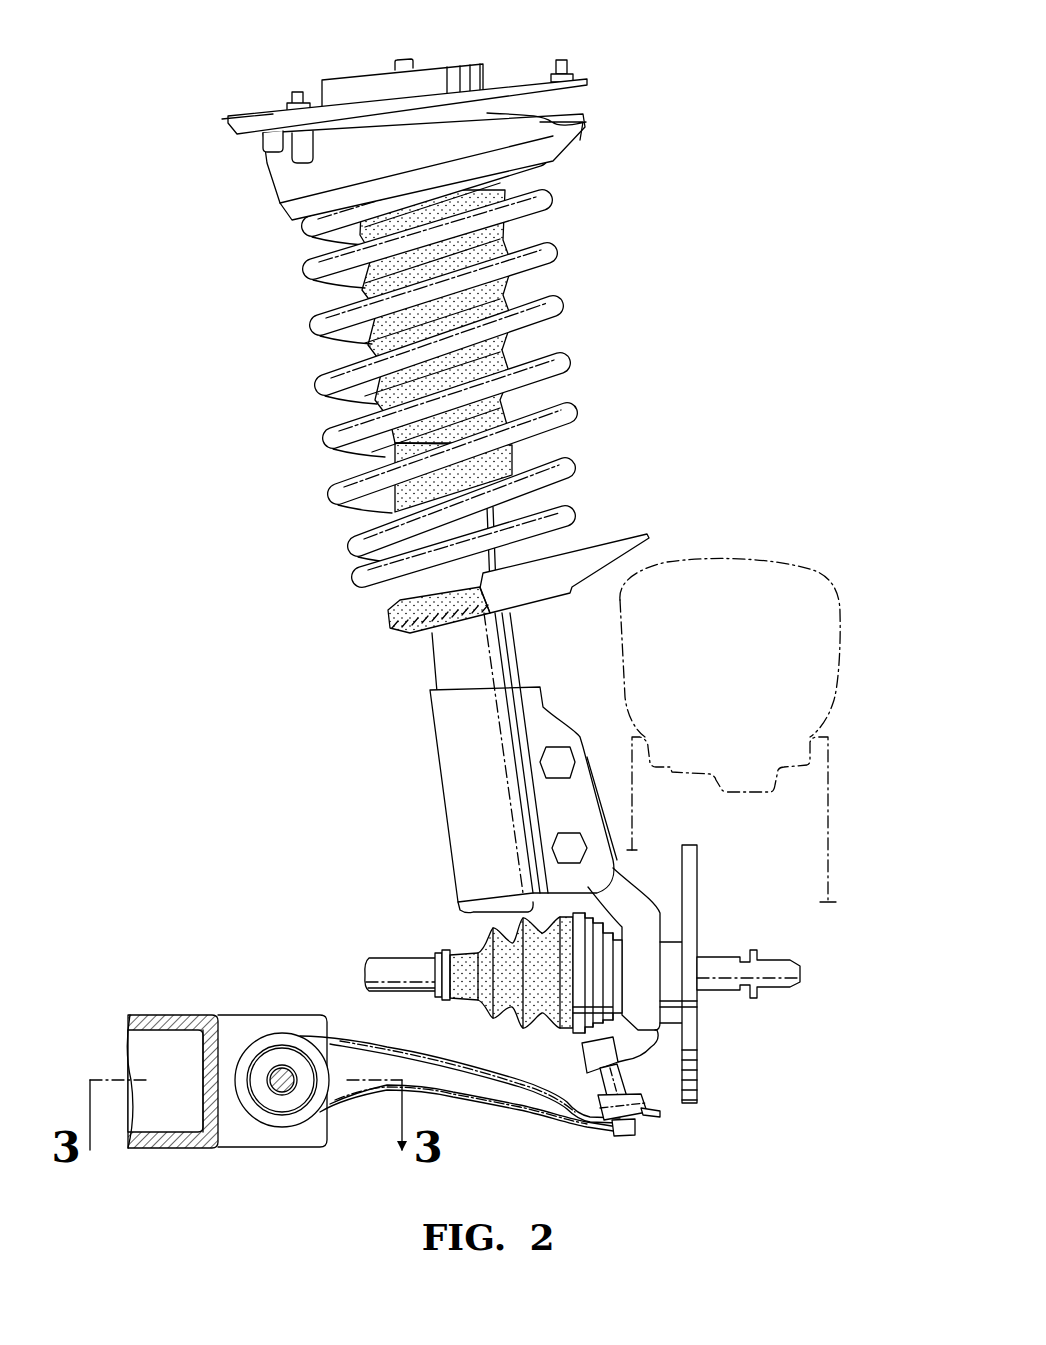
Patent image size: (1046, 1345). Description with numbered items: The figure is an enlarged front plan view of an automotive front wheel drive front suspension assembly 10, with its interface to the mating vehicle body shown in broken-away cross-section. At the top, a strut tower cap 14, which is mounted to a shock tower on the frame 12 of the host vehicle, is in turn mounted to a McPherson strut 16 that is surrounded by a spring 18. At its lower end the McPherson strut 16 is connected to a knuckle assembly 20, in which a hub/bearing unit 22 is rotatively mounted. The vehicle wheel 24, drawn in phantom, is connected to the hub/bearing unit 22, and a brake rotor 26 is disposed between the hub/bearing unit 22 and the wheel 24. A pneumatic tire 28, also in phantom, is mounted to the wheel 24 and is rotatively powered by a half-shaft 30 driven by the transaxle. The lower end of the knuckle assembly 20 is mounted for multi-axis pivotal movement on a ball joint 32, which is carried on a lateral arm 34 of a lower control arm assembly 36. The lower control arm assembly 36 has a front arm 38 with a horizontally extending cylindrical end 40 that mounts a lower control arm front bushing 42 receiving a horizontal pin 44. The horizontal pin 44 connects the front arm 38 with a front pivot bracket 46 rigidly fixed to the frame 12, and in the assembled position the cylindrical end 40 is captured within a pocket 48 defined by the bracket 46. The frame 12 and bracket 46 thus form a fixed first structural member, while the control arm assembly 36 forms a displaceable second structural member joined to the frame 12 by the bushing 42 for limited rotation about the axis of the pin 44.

The front suspension assembly 10 is at (702, 128).
The frame 12 is at (147, 1012).
The strut tower cap 14 is at (488, 78).
The McPherson strut 16 is at (437, 652).
The spring 18 is at (322, 378).
The knuckle assembly 20 is at (637, 907).
The hub/bearing unit 22 is at (610, 983).
The vehicle wheel 24 is at (828, 805).
The brake rotor 26 is at (690, 1053).
The pneumatic tire 28 is at (826, 577).
The half-shaft 30 is at (408, 961).
The ball joint 32 is at (645, 1097).
The lateral arm 34 is at (650, 1115).
The lower control arm assembly 36 is at (527, 1123).
The front arm 38 is at (419, 1068).
The cylindrical end 40 is at (318, 1105).
The lower control arm front bushing 42 is at (264, 1046).
The horizontal pin 44 is at (278, 1090).
The front pivot bracket 46 is at (283, 1014).
The pocket 48 is at (232, 1130).